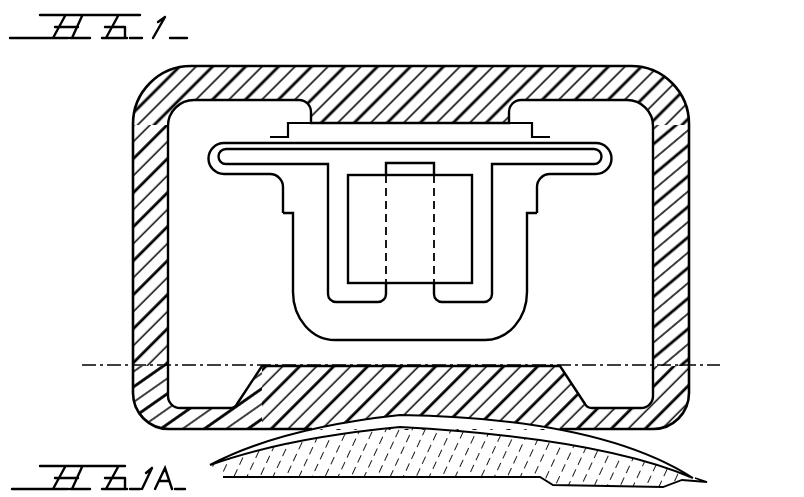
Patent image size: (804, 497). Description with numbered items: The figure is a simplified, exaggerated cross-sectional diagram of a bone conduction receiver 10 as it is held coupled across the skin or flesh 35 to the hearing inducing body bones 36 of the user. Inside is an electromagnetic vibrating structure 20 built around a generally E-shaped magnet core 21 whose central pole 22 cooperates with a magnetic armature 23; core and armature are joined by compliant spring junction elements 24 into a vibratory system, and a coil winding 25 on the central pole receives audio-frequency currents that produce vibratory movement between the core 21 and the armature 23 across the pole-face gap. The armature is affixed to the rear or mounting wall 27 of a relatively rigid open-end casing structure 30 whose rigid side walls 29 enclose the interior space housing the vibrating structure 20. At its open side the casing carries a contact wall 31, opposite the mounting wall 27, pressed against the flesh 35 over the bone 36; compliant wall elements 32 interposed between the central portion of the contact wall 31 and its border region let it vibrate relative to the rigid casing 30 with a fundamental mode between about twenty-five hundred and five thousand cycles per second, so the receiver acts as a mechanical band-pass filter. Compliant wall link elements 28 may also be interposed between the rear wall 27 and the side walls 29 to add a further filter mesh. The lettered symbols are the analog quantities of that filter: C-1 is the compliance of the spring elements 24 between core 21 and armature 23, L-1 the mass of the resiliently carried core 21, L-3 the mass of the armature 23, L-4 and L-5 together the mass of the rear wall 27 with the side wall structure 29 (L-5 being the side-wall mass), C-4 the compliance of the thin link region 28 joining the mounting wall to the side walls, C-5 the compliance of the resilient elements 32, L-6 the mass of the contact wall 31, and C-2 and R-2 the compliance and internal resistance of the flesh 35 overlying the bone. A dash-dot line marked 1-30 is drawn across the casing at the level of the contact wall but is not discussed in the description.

In FIG. 1, the bone conduction receiver 10 is at (122, 266).
In FIG. 1, the electromagnetic vibrating structure 20 is at (288, 284).
In FIG. 1, the E-shaped magnet core 21 is at (306, 314).
In FIG. 1, the central pole 22 is at (419, 163).
In FIG. 1, the magnetic armature 23 is at (287, 124).
In FIG. 1, the spring junction elements 24 is at (216, 149).
In FIG. 1, the coil winding 25 is at (376, 247).
In FIG. 1, the rear or mounting wall 27 is at (420, 49).
In FIG. 1, the compliant wall link elements 28 is at (252, 50).
In FIG. 1, the rigid side walls 29 is at (162, 222).
In FIG. 1, the open-end casing structure 30 is at (128, 184).
In FIG. 1, the contact wall 31 is at (556, 348).
In FIG. 1, the compliant wall elements 32 is at (219, 388).
In FIG. 1A, the skin or flesh 35 is at (625, 453).
In FIG. 1A, the hearing inducing body bones 36 is at (587, 475).
In FIG. 1, the mass of the magnet core L-1 is at (519, 268).
In FIG. 1, the mass of the armature L-3 is at (472, 136).
In FIG. 1, the mass of the casing rear wall L-4 is at (507, 48).
In FIG. 1, the mass of the casing side walls L-5 is at (686, 247).
In FIG. 1, the mass of the contact wall L-6 is at (453, 369).
In FIG. 1, the compliance of the spring elements C-1 is at (578, 175).
In FIG. 1A, the compliance of the flesh C-2 is at (660, 472).
In FIG. 1, the compliance of the rear wall link region C-4 is at (618, 99).
In FIG. 1, the compliance of the resilient elements C-5 is at (586, 405).
In FIG. 1A, the internal resistance of the flesh R-2 is at (695, 479).
In FIG. 1, the section line 1-30 is at (394, 367).